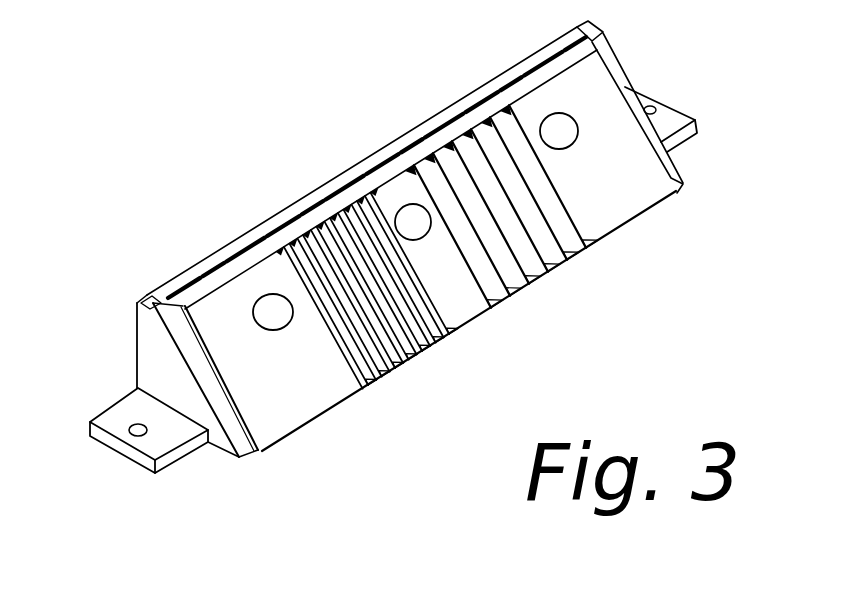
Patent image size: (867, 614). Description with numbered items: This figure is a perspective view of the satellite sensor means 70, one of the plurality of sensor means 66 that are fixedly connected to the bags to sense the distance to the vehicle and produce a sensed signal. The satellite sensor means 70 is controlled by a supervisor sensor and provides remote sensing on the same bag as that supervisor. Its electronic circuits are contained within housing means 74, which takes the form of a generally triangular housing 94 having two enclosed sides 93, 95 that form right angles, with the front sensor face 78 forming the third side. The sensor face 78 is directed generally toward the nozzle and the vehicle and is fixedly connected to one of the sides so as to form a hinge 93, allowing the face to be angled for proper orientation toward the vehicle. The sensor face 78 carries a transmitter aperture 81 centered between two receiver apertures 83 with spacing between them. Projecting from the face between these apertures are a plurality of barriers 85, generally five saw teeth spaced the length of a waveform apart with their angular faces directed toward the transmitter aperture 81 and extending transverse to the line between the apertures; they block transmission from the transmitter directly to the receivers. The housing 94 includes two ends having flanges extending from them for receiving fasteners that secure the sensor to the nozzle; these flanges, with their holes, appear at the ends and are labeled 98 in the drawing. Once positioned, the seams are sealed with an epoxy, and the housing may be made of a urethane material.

The sensor means 66 is at (167, 280).
The satellite sensor means 70 is at (463, 96).
The housing means 74 is at (140, 363).
The sensor face 78 is at (632, 210).
The transmitter aperture 81 is at (398, 210).
The receiver apertures 83 is at (262, 297).
The barriers 85 is at (423, 352).
The hinge 93 is at (312, 206).
The triangular housing 94 is at (236, 460).
The enclosed side 95 is at (217, 450).
The mounting feet 98 is at (105, 438).